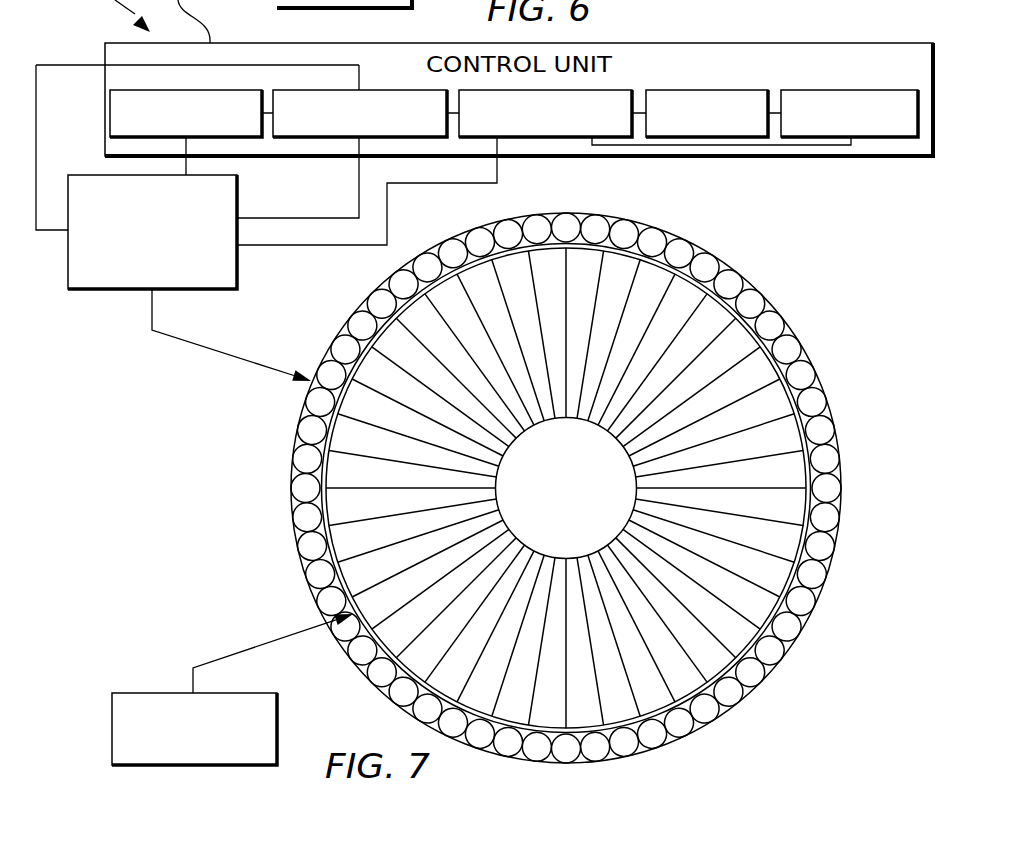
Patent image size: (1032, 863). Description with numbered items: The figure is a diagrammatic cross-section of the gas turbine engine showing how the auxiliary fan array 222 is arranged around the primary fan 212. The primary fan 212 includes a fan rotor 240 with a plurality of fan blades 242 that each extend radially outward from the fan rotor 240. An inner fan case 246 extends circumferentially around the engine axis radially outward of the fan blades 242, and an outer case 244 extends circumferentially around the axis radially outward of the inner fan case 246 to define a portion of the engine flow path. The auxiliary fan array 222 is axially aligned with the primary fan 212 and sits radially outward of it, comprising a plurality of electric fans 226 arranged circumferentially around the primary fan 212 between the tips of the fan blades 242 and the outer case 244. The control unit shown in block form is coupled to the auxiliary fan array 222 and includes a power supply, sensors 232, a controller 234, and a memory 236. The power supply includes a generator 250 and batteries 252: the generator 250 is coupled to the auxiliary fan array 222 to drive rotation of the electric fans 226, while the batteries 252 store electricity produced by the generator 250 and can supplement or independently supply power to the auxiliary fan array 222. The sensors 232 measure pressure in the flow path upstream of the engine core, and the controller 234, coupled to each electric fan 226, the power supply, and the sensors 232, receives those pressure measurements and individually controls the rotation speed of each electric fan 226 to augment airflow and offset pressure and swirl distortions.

The primary fan 212 is at (112, 730).
The auxiliary fan array 222 is at (103, 290).
The electric fan 226 is at (273, 476).
The sensors 232 is at (851, 90).
The controller 234 is at (612, 90).
The memory 236 is at (703, 90).
The fan rotor 240 is at (585, 496).
The fan blades 242 is at (328, 550).
The outer case 244 is at (270, 524).
The inner fan case 246 is at (330, 602).
The generator 250 is at (397, 90).
The batteries 252 is at (198, 90).